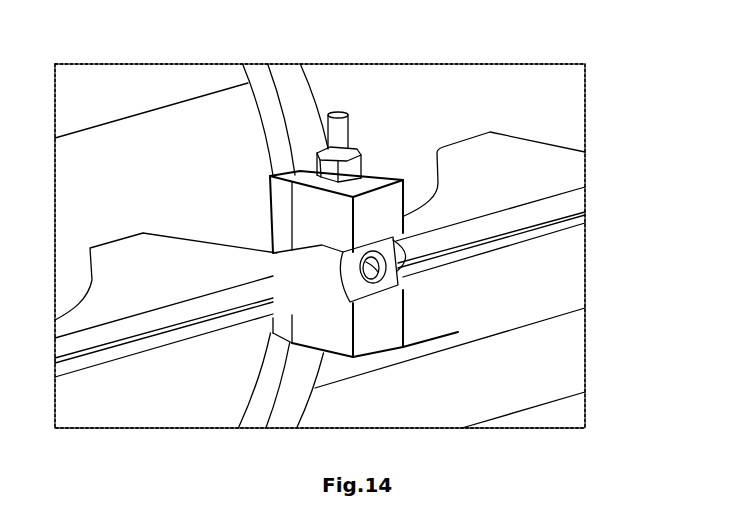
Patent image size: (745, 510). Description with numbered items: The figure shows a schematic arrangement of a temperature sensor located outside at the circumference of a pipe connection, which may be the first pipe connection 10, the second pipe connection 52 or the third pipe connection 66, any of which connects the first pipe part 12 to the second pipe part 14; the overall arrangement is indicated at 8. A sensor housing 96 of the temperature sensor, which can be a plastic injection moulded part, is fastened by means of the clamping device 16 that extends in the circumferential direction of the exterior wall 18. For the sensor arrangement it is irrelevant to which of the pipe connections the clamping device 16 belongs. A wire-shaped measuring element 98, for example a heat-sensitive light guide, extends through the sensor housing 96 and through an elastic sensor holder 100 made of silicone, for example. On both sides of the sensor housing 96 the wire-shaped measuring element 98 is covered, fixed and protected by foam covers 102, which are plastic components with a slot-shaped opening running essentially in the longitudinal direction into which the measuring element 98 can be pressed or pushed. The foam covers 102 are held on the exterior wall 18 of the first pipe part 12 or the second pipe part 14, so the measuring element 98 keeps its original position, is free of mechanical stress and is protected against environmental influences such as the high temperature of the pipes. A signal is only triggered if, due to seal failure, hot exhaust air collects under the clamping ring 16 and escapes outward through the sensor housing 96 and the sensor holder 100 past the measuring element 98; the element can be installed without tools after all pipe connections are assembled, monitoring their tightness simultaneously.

The frame 8 is at (78, 207).
The first pipe connection 10 is at (398, 214).
The first pipe part 12 is at (128, 180).
The second pipe part 14 is at (518, 93).
The clamping device 16 is at (324, 392).
The exterior wall 18 is at (567, 129).
The second pipe connection 52 is at (398, 214).
The third pipe connection 66 is at (607, 97).
The sensor housing 96 is at (306, 211).
The wire-shaped measuring element 98 is at (397, 267).
The elastic sensor holder 100 is at (398, 299).
The foam covers 102 is at (166, 285).